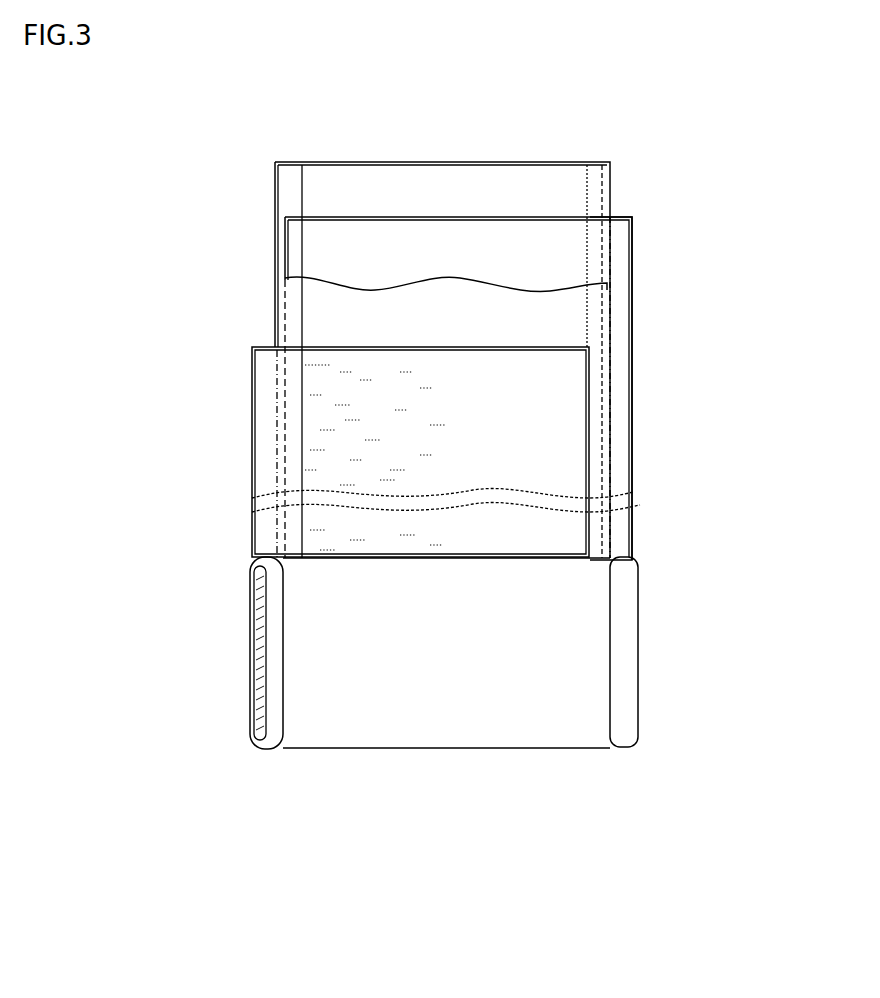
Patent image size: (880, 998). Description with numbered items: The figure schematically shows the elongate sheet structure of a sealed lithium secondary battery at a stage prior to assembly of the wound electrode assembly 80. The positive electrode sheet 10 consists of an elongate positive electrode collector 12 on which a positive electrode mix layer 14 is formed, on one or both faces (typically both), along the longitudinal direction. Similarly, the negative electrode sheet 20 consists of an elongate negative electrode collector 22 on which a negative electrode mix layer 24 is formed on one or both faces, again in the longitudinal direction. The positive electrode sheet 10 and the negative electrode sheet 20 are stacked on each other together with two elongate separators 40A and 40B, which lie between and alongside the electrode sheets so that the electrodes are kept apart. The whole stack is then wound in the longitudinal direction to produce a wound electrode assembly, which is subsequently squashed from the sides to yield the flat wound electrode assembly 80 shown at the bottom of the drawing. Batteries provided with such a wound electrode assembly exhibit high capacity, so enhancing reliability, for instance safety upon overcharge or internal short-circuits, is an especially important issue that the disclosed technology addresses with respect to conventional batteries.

The positive electrode sheet 10 is at (252, 418).
The positive electrode collector 12 is at (255, 488).
The positive electrode mix layer 14 is at (312, 365).
The negative electrode sheet 20 is at (633, 290).
The negative electrode collector 22 is at (633, 393).
The negative electrode mix layer 24 is at (590, 240).
The separator 40A is at (302, 178).
The separator 40B is at (300, 310).
The wound electrode assembly 80 is at (505, 728).